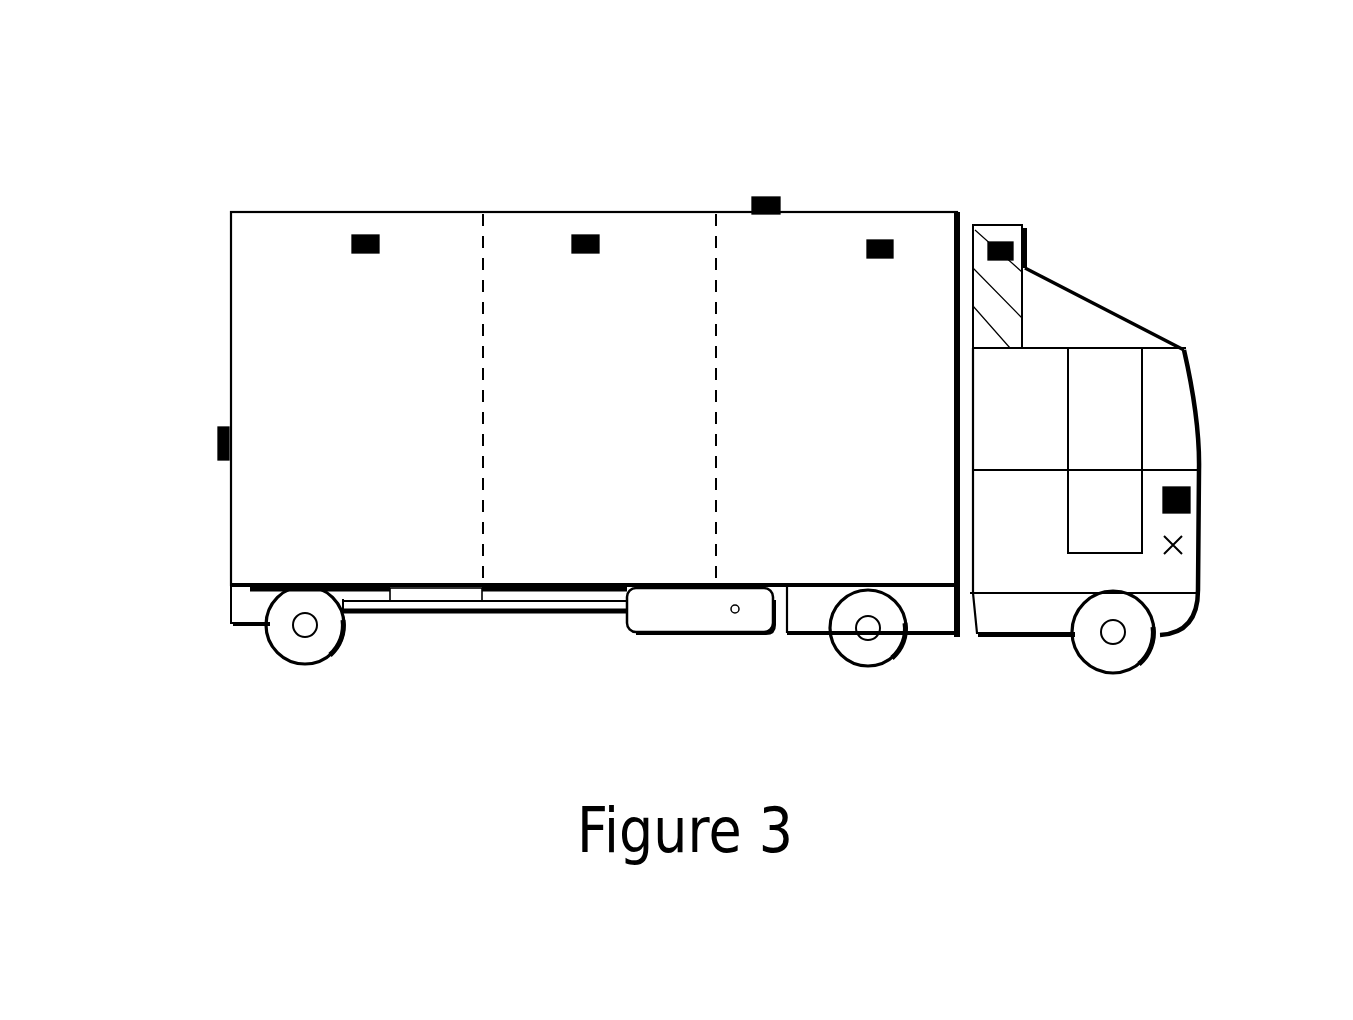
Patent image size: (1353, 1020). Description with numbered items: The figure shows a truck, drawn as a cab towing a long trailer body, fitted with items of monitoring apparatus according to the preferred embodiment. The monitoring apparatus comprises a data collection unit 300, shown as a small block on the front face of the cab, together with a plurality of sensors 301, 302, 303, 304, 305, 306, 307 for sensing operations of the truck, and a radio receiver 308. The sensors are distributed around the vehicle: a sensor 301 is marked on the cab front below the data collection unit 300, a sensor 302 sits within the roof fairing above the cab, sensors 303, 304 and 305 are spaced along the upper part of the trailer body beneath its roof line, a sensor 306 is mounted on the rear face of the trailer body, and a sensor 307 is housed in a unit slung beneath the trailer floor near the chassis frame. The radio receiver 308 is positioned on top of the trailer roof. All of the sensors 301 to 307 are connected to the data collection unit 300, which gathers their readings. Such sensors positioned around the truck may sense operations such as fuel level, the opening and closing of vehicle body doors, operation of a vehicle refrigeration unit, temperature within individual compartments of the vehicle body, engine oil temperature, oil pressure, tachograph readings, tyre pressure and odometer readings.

The data collection unit 300 is at (1190, 500).
The sensor 301 is at (1178, 540).
The sensor 302 is at (1003, 245).
The sensor 303 is at (888, 240).
The sensor 304 is at (583, 236).
The sensor 305 is at (368, 236).
The sensor 306 is at (218, 443).
The sensor 307 is at (690, 612).
The radio receiver 308 is at (770, 197).